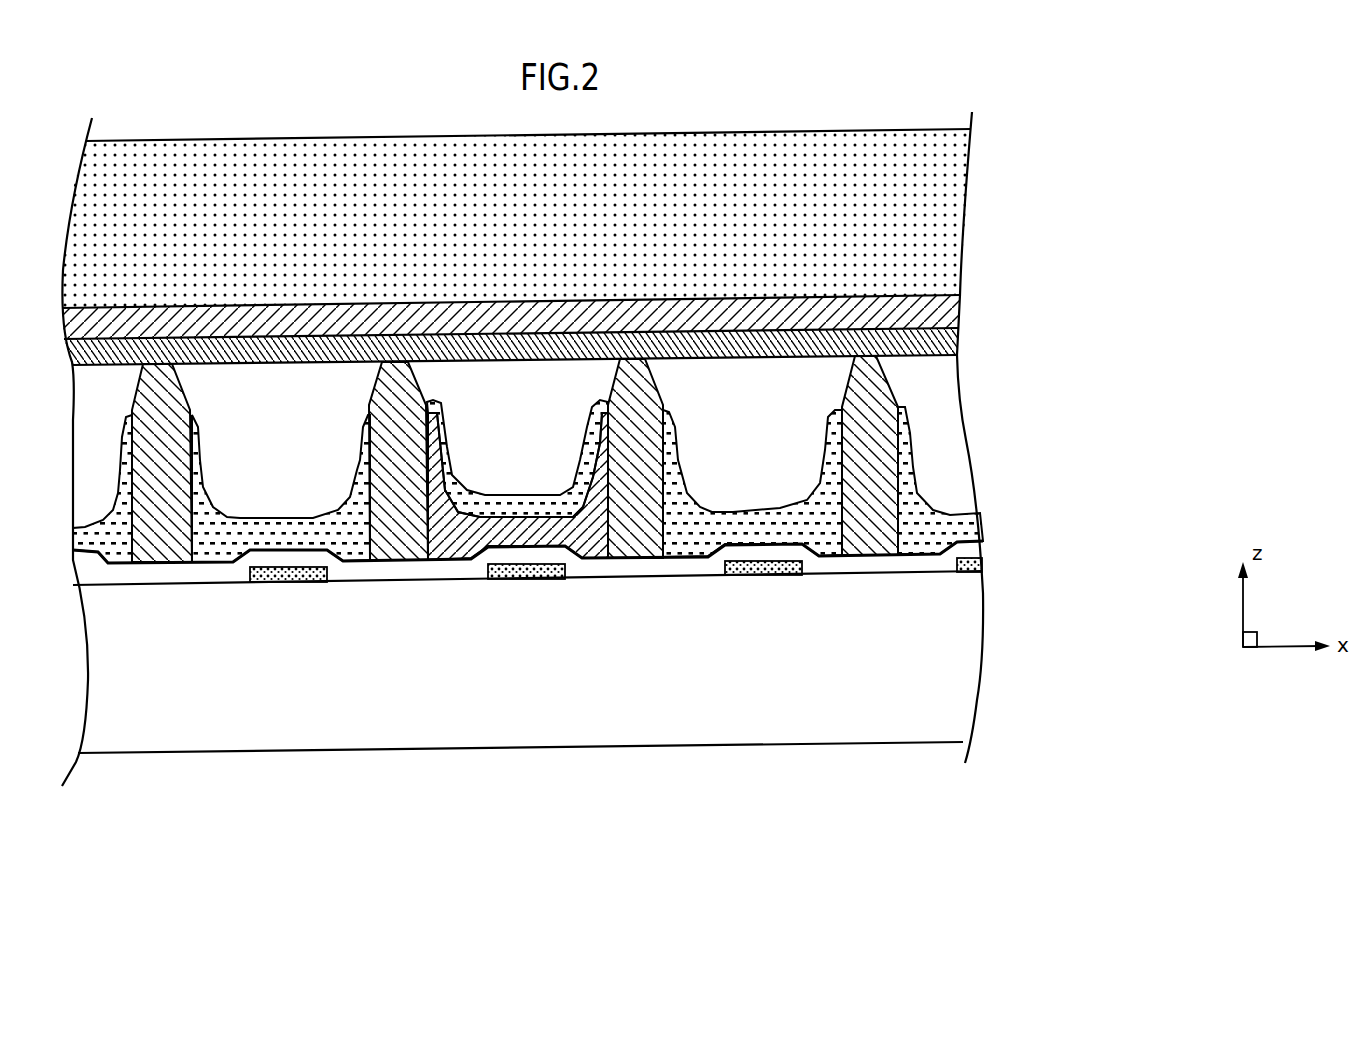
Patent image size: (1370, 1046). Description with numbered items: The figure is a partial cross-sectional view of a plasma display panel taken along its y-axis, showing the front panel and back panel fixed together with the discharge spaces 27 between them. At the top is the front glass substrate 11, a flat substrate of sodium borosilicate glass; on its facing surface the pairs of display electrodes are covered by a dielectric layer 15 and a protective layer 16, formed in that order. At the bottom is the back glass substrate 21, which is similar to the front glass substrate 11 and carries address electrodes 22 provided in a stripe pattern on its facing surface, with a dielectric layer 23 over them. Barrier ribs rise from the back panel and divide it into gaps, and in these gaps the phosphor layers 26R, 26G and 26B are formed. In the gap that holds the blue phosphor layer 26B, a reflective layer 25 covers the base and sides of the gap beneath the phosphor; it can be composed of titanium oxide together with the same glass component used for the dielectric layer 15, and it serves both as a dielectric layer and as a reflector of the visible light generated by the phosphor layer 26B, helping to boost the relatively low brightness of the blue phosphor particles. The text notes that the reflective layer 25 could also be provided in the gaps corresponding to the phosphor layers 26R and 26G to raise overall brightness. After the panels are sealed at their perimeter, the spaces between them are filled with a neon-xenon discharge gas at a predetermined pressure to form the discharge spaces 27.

The front glass substrate 11 is at (935, 217).
The dielectric layer 15 is at (940, 312).
The protective layer 16 is at (937, 340).
The back glass substrate 21 is at (960, 597).
The address electrodes 22 is at (305, 583).
The dielectric layer 23 is at (977, 550).
The reflective layer 25 is at (575, 530).
The phosphor layer 26R is at (233, 563).
The phosphor layer 26G is at (507, 497).
The phosphor layer 26B is at (708, 535).
The discharge spaces 27 is at (980, 398).